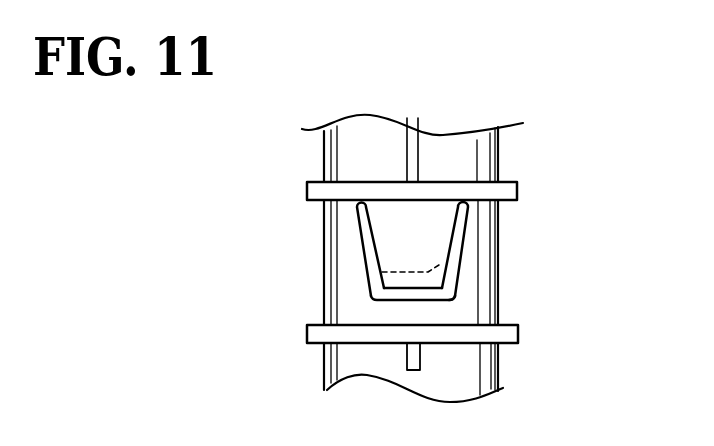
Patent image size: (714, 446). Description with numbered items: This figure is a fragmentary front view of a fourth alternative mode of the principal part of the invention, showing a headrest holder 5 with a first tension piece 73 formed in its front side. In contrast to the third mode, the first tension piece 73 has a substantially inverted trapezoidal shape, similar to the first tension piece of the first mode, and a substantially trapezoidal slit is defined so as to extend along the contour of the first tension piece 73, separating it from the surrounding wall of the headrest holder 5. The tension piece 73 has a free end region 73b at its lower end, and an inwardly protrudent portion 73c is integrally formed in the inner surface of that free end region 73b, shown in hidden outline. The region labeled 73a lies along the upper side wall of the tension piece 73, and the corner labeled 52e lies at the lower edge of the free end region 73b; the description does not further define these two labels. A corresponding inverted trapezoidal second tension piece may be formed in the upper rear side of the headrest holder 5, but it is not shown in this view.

The headrest holder 5 is at (508, 149).
The first tension piece 73 is at (413, 269).
The holder side wall 73a is at (380, 210).
The free end region 73b is at (393, 270).
The inwardly protrudent portion 73c is at (452, 259).
The engagement corner 52e is at (447, 289).